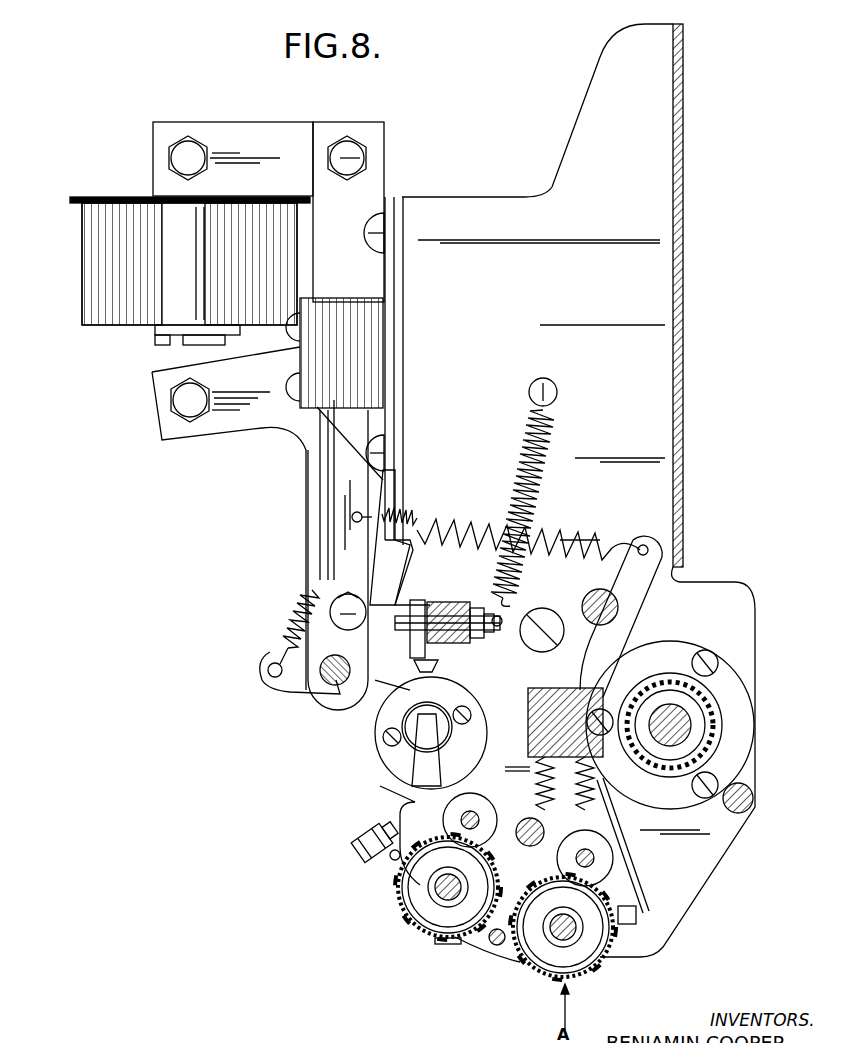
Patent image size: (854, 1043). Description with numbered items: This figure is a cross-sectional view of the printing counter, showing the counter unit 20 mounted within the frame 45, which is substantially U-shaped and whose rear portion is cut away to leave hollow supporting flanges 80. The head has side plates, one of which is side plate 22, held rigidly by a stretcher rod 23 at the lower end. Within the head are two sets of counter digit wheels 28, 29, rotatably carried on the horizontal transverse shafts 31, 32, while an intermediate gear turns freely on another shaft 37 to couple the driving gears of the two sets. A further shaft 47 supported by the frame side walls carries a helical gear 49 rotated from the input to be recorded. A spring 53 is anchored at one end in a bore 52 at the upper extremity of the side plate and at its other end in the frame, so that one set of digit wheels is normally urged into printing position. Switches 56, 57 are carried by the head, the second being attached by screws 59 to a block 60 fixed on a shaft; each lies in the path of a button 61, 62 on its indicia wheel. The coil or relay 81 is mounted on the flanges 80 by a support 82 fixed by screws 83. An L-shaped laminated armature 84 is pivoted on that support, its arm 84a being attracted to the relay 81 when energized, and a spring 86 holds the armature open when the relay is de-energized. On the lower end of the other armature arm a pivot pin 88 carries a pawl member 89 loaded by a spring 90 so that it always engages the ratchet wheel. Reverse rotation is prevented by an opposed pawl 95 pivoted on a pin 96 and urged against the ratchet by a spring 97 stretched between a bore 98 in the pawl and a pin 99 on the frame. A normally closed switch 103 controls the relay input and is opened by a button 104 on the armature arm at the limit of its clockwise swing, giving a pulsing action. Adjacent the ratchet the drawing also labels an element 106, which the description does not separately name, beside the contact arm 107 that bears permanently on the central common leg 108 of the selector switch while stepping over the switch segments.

The counter unit 20 is at (390, 916).
The side plate 22 is at (638, 605).
The stretcher rod 23 is at (497, 947).
The counter digit wheels 28 is at (438, 938).
The counter digit wheels 29 is at (588, 977).
The shaft 31 is at (448, 872).
The shaft 32 is at (563, 913).
The shaft 37 is at (529, 842).
The frame 45 is at (712, 860).
The shaft 47 is at (695, 728).
The helical gear 49 is at (660, 690).
The bore 52 is at (644, 544).
The spring 53 is at (592, 540).
The switch 56 is at (358, 838).
The switch 57 is at (642, 886).
The screws 59 is at (585, 814).
The block 60 is at (574, 692).
The button 61 is at (392, 860).
The button 62 is at (635, 924).
The hollow supporting flanges 80 is at (396, 200).
The coil or relay 81 is at (112, 212).
The support 82 is at (292, 112).
The screws 83 is at (370, 222).
The L-shaped laminated armature 84 is at (296, 443).
The arm of the L 84a is at (215, 430).
The spring 86 is at (412, 512).
The pivot pin 88 is at (333, 686).
The pawl member 89 is at (292, 684).
The spring 90 is at (290, 619).
The opposed pawl 95 is at (536, 612).
The pin 96 is at (588, 598).
The spring 97 is at (538, 474).
The bore 98 is at (492, 614).
The pin 99 is at (543, 378).
The normally closed switch 103 is at (320, 526).
The button 104 is at (352, 600).
The wheel 106 is at (482, 676).
The contact arm 107 is at (415, 767).
The central common leg 108 is at (425, 696).